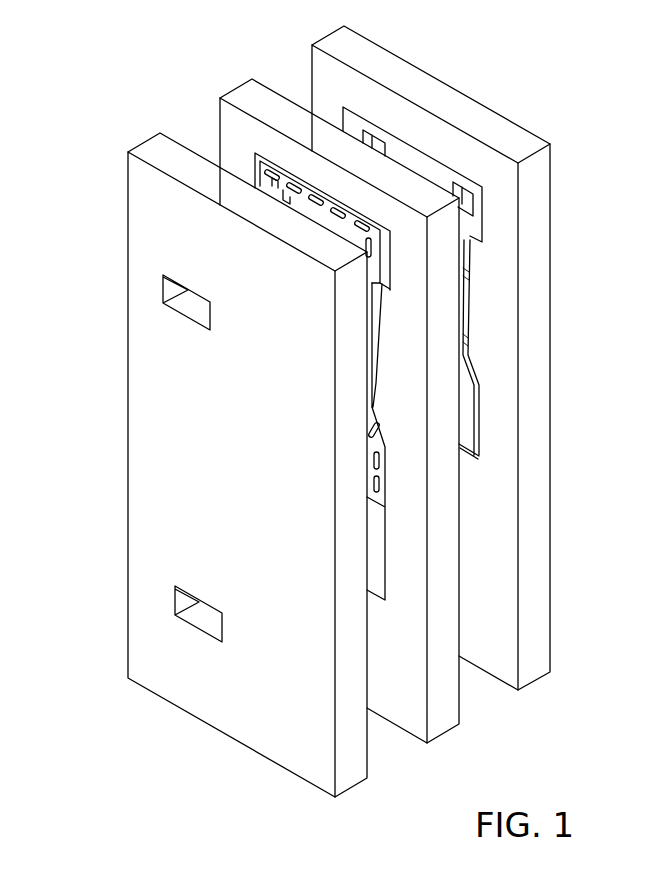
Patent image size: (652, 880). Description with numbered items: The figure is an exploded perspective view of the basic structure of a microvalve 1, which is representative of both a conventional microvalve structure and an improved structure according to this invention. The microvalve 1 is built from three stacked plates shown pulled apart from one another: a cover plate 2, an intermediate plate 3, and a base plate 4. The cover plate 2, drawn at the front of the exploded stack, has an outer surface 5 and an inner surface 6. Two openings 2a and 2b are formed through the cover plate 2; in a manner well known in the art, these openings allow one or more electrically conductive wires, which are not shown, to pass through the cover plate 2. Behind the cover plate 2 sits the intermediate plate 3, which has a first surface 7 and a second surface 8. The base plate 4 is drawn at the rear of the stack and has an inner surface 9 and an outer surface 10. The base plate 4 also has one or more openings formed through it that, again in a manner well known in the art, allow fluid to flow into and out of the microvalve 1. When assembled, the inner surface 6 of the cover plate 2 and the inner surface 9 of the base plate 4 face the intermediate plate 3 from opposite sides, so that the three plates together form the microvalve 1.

The microvalve 1 is at (498, 66).
The cover plate 2 is at (153, 147).
The opening 2a is at (188, 308).
The opening 2b is at (199, 625).
The intermediate plate 3 is at (247, 96).
The base plate 4 is at (338, 43).
The outer surface 5 is at (318, 767).
The inner surface 6 is at (367, 758).
The first surface 7 is at (413, 720).
The second surface 8 is at (458, 707).
The inner surface 9 is at (505, 667).
The outer surface 10 is at (549, 652).